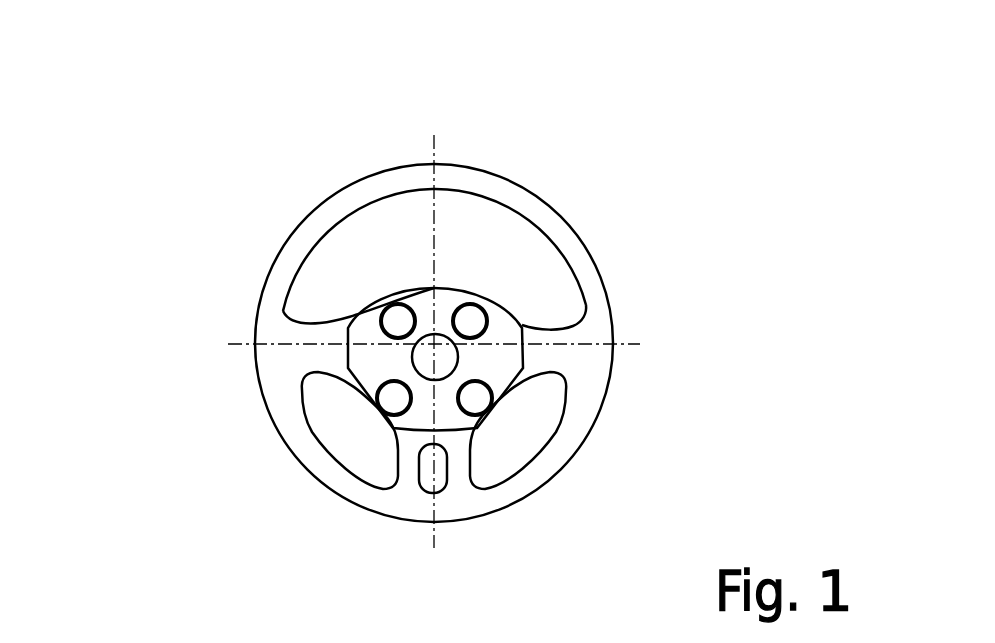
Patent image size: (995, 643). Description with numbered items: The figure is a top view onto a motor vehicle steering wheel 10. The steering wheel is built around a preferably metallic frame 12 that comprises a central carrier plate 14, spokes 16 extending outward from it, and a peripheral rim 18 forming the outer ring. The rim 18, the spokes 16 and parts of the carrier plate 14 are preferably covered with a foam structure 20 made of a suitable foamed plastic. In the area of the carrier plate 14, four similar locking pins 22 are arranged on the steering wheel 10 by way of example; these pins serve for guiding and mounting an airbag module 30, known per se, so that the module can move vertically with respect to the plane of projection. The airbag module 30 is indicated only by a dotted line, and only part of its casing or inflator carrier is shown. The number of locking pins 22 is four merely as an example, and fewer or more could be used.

The motor vehicle steering wheel 10 is at (568, 162).
The frame 12 is at (417, 413).
The carrier plate 14 is at (403, 371).
The spokes 16 is at (553, 357).
The peripheral rim 18 is at (293, 252).
The foam structure 20 is at (258, 392).
The locking pins 22 is at (473, 320).
The airbag module 30 is at (424, 291).